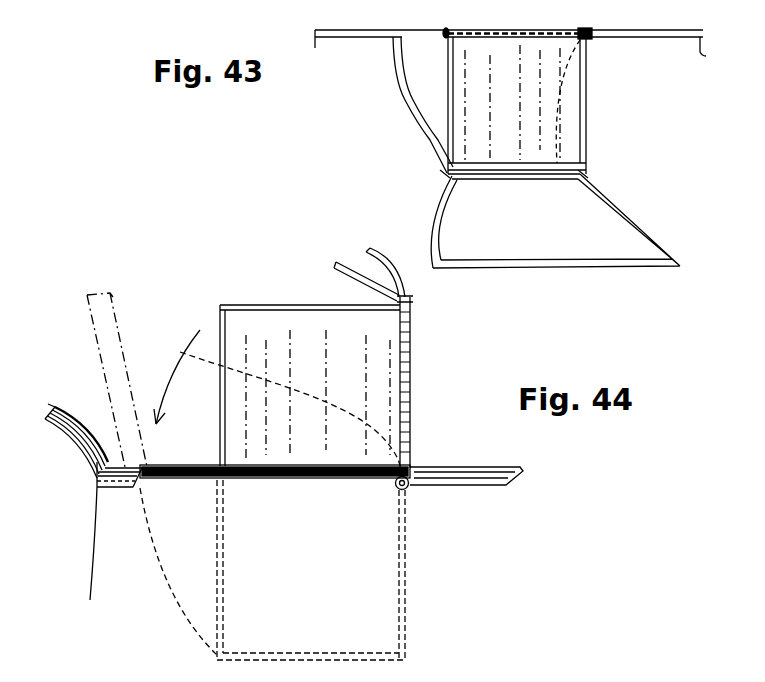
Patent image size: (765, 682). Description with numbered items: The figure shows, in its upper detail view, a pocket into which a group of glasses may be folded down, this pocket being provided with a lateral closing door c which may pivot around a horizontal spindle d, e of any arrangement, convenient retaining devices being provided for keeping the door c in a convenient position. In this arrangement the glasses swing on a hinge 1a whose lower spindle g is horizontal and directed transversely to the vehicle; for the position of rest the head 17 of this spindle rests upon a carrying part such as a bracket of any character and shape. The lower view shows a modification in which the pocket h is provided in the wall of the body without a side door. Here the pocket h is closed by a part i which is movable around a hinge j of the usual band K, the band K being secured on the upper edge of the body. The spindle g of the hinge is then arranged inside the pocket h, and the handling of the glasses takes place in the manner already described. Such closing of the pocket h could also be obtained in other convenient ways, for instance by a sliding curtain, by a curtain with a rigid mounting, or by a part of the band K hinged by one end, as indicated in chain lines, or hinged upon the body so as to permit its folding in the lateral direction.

In FIG. 43, the head 17 is at (447, 30).
In FIG. 43, the hinge 1a is at (520, 30).
In FIG. 43, the lower spindle g is at (592, 30).
In FIG. 44, the lower spindle g is at (397, 489).
In FIG. 43, the horizontal spindle d is at (430, 169).
In FIG. 43, the horizontal spindle e is at (586, 174).
In FIG. 43, the lateral closing door c is at (566, 252).
In FIG. 44, the movable part i is at (97, 358).
In FIG. 44, the hinge j is at (140, 470).
In FIG. 44, the pocket h is at (200, 465).
In FIG. 44, the band K is at (452, 478).